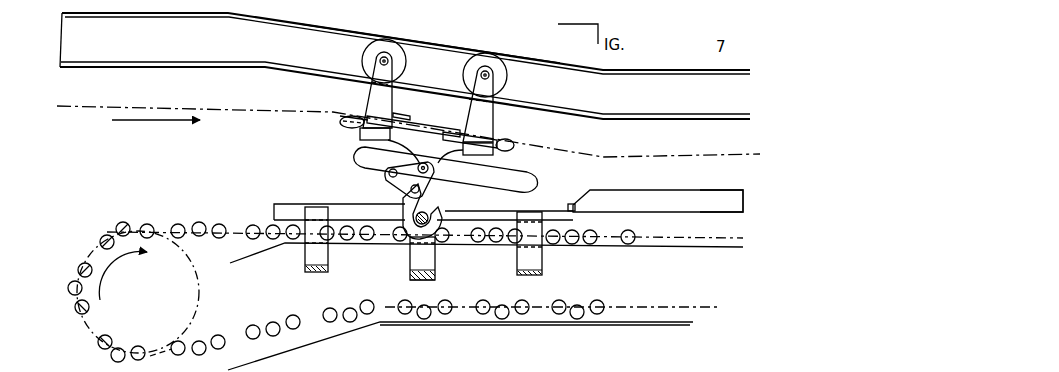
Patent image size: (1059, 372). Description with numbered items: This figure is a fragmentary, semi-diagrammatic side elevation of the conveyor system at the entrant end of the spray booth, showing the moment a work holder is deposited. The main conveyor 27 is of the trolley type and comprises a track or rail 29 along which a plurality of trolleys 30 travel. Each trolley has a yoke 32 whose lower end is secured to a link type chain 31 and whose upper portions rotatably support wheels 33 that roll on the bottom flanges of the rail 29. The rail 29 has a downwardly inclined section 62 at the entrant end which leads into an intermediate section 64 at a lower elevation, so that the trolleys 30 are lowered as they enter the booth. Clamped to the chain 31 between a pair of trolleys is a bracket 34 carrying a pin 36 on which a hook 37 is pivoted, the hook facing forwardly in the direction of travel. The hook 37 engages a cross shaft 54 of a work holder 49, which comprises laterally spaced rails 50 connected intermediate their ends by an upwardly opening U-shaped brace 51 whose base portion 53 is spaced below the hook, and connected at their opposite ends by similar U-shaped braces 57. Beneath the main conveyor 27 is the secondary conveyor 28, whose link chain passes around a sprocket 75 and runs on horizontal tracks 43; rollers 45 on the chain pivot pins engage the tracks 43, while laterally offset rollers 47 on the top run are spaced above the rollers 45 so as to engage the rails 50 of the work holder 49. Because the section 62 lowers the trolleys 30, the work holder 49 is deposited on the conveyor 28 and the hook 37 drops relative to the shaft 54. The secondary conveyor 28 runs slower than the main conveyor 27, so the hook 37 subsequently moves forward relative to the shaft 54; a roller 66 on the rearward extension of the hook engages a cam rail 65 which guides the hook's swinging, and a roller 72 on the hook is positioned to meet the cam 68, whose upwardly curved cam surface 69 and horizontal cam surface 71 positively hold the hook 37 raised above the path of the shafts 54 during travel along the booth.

The track or rail 29 is at (143, 50).
The downwardly inclined section 62 is at (438, 55).
The intermediate section 64 is at (697, 100).
The wheels 33 is at (383, 57).
The trolleys 30 is at (396, 99).
The yoke 32 is at (380, 107).
The bracket 34 is at (422, 153).
The link type chain 31 is at (340, 122).
The main conveyor 27 is at (340, 110).
The pin 36 is at (430, 169).
The hook 37 is at (429, 190).
The rollers 66 is at (389, 174).
The rollers 72 is at (410, 189).
The cross shafts 54 is at (447, 213).
The cam rails 65 is at (517, 175).
The cams 68 is at (657, 193).
The cam surfaces 71 is at (707, 200).
The cam surfaces 69 is at (574, 205).
The work holder 49 is at (300, 199).
The rails 50 is at (580, 218).
The tracks 43 is at (683, 247).
The U-shaped braces 57 is at (316, 252).
The U-shaped brace 51 is at (427, 253).
The base portion 53 is at (436, 276).
The secondary conveyor 28 is at (139, 222).
The sprockets 75 is at (203, 303).
The rollers 47 is at (573, 243).
The rollers 45 is at (630, 243).